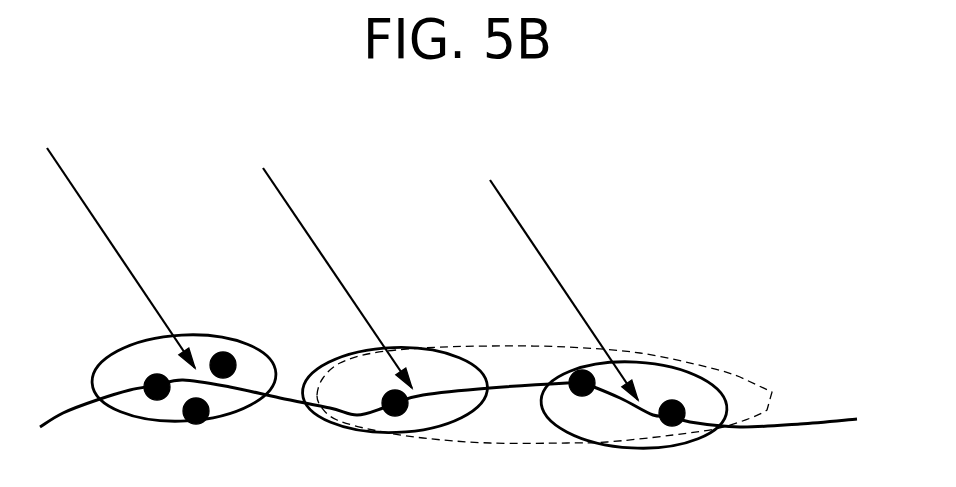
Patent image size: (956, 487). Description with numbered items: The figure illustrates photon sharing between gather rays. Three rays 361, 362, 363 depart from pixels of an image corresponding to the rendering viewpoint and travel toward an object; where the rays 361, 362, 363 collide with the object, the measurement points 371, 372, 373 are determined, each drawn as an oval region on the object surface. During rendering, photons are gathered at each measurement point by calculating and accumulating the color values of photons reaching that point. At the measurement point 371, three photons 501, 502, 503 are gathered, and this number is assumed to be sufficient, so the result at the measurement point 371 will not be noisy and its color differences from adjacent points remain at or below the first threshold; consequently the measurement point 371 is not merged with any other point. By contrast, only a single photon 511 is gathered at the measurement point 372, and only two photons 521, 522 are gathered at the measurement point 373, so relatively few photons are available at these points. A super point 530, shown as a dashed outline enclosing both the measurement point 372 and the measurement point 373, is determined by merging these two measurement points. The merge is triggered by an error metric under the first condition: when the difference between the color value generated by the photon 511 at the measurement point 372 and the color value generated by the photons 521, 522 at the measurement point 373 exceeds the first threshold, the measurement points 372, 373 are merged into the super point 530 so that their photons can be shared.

The ray 361 is at (85, 203).
The ray 362 is at (303, 222).
The ray 363 is at (520, 222).
The measurement point 371 is at (198, 335).
The measurement point 372 is at (362, 432).
The measurement point 373 is at (637, 362).
The photon 501 is at (152, 372).
The photon 502 is at (235, 362).
The photon 503 is at (197, 422).
The photon 511 is at (400, 415).
The photon 521 is at (575, 372).
The photon 522 is at (683, 403).
The super point 530 is at (780, 383).